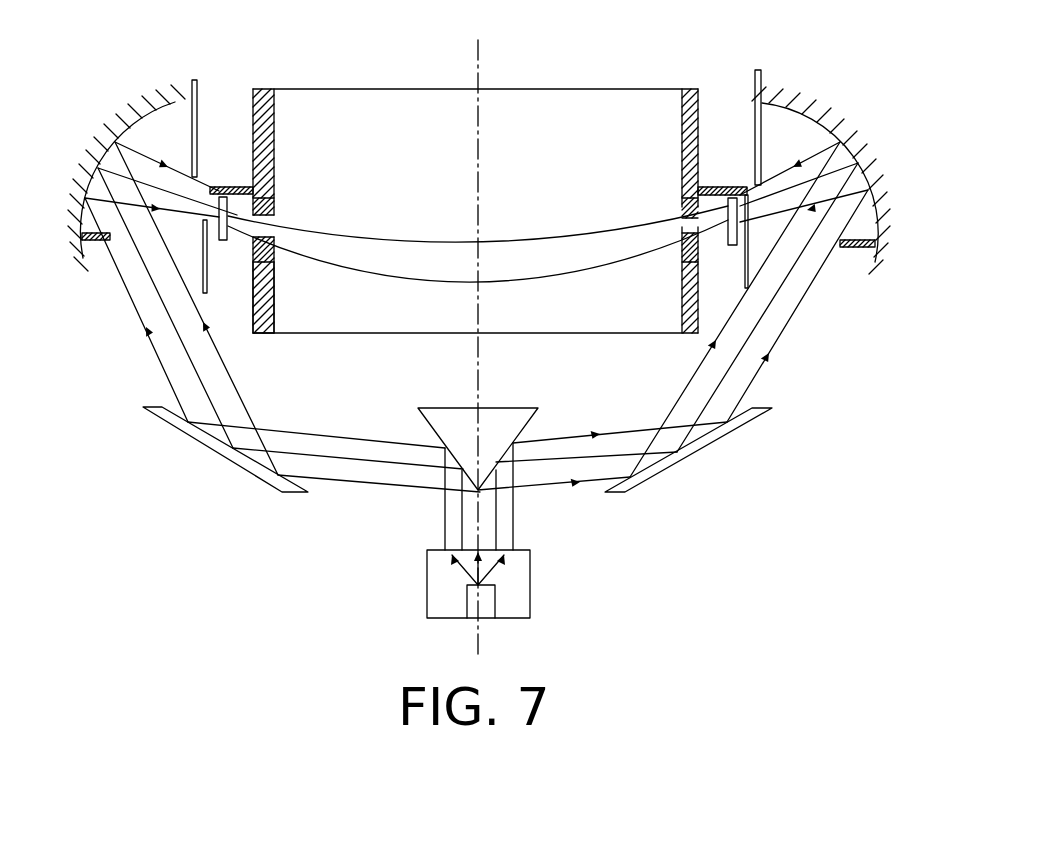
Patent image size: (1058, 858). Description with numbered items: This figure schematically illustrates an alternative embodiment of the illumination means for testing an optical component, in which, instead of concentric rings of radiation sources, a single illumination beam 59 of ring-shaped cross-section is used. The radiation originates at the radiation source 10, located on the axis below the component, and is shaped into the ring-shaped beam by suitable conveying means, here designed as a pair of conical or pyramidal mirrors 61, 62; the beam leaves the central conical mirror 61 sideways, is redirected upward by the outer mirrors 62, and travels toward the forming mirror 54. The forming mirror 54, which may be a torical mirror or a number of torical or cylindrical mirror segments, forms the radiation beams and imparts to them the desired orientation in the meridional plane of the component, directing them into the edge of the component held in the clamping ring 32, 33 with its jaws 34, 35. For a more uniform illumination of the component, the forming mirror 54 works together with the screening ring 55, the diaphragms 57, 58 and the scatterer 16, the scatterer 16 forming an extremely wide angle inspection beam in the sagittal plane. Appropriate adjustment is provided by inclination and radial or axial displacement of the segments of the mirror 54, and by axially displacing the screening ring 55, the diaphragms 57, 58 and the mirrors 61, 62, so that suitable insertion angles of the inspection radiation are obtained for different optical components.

The radiation source 10 is at (517, 582).
The scatterer 16 is at (223, 240).
The clamping ring 32 is at (267, 310).
The clamping ring 33 is at (267, 118).
The jaw 34 is at (273, 243).
The jaw 35 is at (273, 215).
The forming and deflection mirror 54 is at (823, 125).
The screening ring 55 is at (760, 78).
The screening diaphragm 57 is at (882, 215).
The screening diaphragm 58 is at (715, 185).
The illumination beam 59 is at (800, 303).
The conical or pyramidal mirror 61 is at (515, 461).
The conical or pyramidal mirror 62 is at (715, 442).